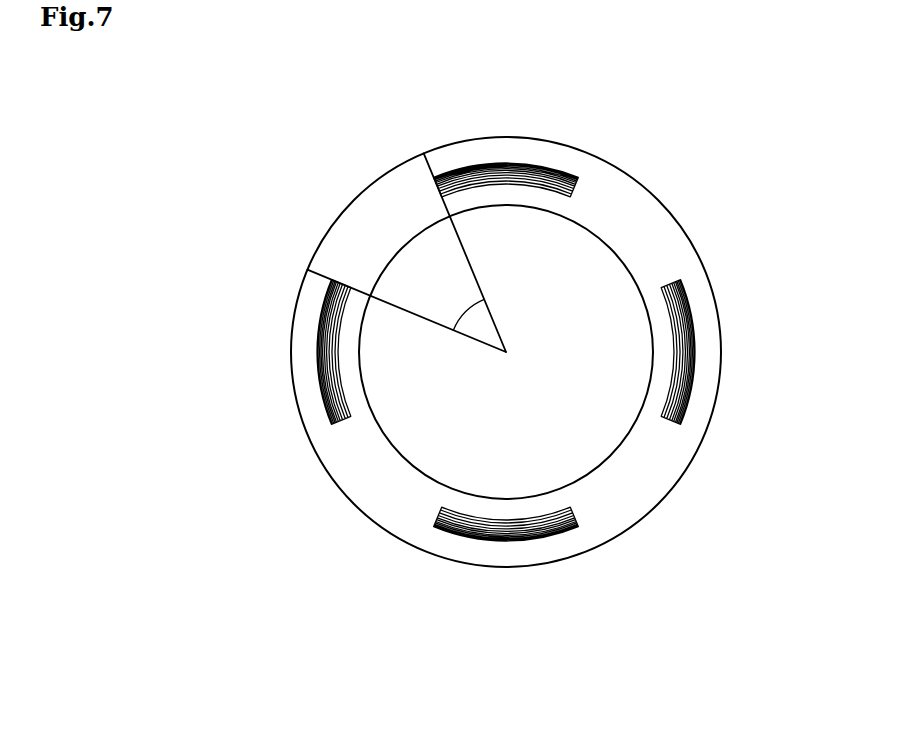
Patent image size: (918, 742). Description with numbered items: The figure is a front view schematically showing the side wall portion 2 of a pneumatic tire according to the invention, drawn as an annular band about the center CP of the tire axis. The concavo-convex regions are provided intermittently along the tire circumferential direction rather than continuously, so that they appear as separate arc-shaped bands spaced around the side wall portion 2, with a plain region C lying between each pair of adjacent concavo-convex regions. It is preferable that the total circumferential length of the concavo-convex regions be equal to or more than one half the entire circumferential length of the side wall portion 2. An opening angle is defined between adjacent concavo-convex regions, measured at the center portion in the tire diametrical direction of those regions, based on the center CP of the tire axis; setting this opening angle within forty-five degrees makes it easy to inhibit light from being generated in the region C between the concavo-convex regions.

The side wall portion 2 is at (602, 211).
The center of the tire axis CP is at (508, 369).
The region between the concavo-convex regions C is at (396, 200).